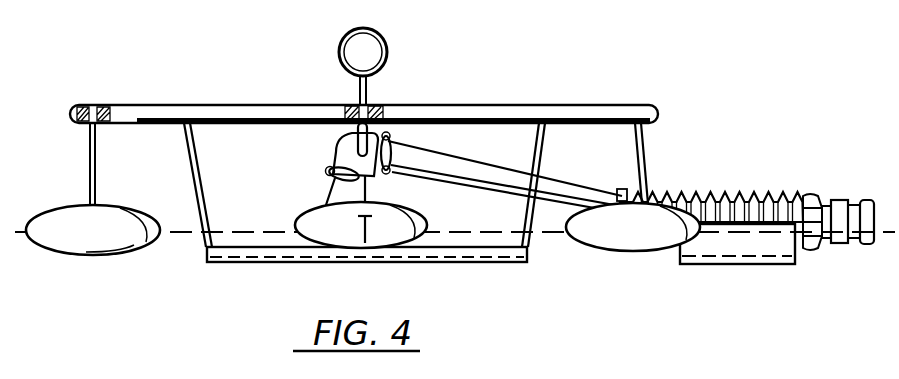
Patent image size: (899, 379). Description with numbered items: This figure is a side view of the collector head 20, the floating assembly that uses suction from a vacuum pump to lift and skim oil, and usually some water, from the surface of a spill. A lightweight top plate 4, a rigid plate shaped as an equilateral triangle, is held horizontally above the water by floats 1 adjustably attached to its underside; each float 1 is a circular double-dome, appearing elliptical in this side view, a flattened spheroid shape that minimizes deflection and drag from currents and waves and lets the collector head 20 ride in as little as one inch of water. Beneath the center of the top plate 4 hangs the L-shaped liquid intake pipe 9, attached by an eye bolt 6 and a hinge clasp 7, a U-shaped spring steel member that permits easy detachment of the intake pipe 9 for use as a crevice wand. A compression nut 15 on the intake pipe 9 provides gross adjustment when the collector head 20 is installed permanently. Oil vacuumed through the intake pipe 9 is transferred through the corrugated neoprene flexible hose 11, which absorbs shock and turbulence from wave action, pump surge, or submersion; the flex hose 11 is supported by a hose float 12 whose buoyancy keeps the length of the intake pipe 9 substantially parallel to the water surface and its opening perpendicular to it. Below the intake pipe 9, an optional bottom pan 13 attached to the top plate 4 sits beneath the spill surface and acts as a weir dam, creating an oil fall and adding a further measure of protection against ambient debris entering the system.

The float 1 is at (145, 212).
The top plate 4 is at (237, 106).
The eye bolt 6 is at (385, 46).
The hinge clasp 7 is at (356, 135).
The liquid intake pipe 9 is at (338, 157).
The flexible hose 11 is at (732, 196).
The hose float 12 is at (716, 266).
The bottom pan 13 is at (498, 258).
The compression nut 15 is at (330, 178).
The collector head 20 is at (552, 95).